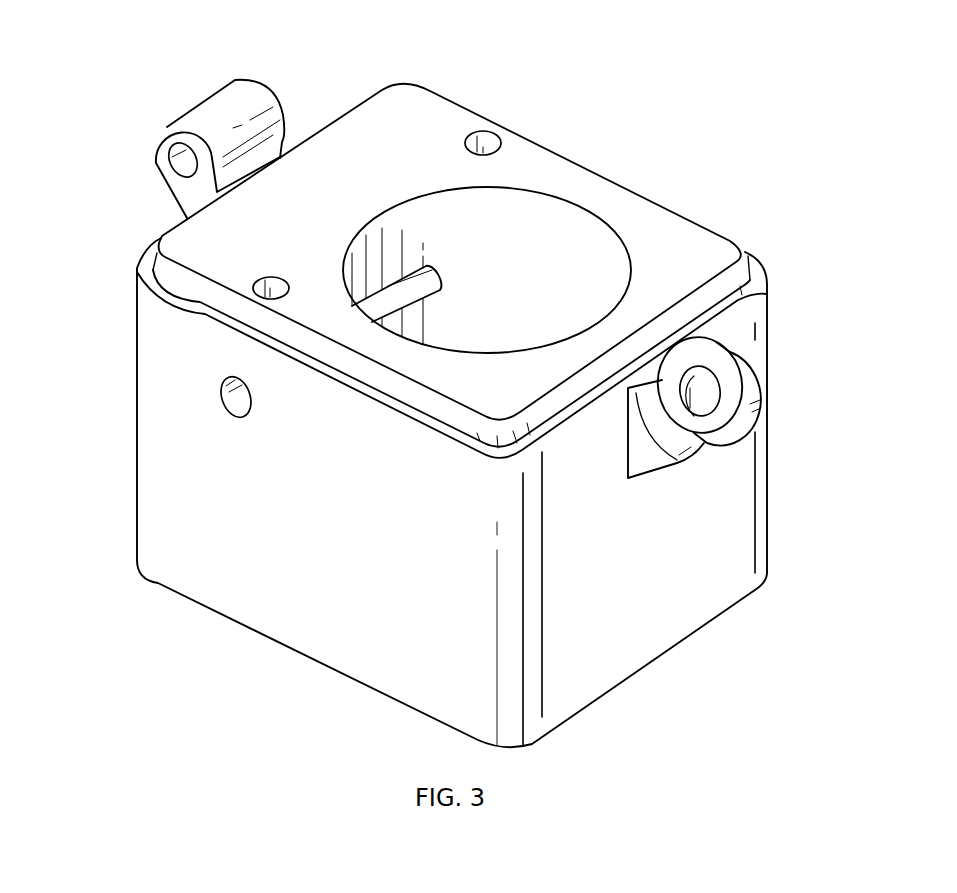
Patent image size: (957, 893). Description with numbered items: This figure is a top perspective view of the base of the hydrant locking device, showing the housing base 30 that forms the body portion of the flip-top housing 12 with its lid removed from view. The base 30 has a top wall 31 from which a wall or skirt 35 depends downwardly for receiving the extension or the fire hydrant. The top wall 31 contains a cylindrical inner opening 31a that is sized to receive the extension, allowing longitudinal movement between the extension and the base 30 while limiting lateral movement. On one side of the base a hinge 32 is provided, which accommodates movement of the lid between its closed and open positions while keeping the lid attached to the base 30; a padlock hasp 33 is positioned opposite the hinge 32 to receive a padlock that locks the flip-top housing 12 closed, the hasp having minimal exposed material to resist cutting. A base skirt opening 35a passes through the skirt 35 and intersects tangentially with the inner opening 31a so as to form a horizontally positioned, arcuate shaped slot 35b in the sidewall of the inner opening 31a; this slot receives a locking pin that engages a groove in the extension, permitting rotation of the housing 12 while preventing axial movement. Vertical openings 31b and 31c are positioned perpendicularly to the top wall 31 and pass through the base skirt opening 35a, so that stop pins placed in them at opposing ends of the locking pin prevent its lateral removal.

The flip-top housing 12 is at (878, 144).
The housing base 30 is at (745, 117).
The top wall 31 is at (386, 114).
The inner opening 31a is at (587, 233).
The vertical opening 31b is at (488, 141).
The vertical opening 31c is at (256, 283).
The hinge 32 is at (114, 116).
The padlock hasp 33 is at (760, 361).
The skirt 35 is at (268, 602).
The base skirt opening 35a is at (232, 408).
The arcuate shaped slot 35b is at (442, 290).